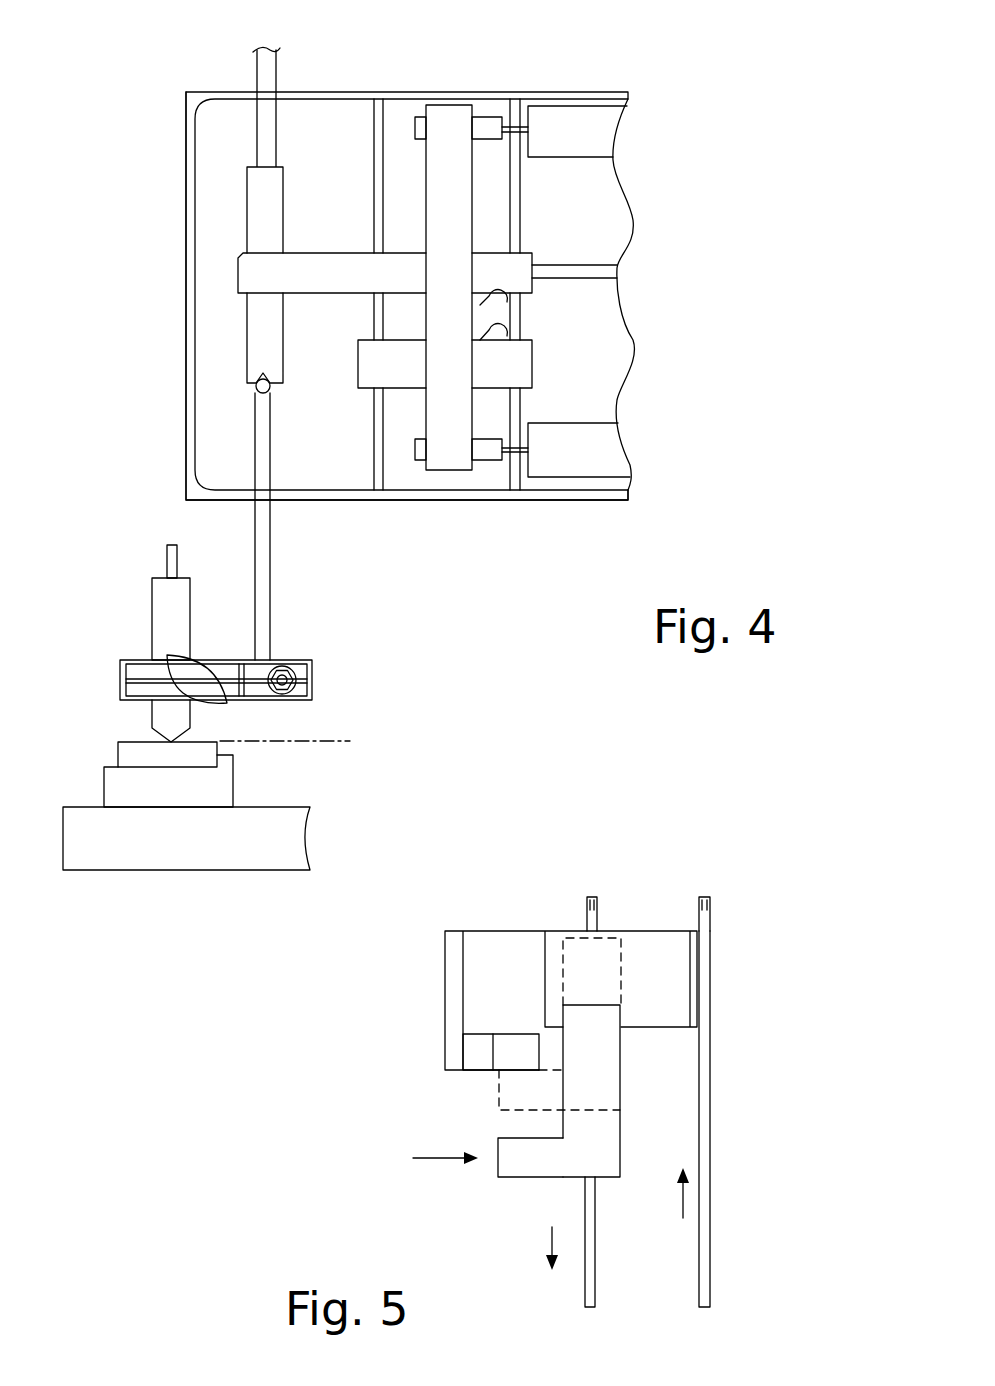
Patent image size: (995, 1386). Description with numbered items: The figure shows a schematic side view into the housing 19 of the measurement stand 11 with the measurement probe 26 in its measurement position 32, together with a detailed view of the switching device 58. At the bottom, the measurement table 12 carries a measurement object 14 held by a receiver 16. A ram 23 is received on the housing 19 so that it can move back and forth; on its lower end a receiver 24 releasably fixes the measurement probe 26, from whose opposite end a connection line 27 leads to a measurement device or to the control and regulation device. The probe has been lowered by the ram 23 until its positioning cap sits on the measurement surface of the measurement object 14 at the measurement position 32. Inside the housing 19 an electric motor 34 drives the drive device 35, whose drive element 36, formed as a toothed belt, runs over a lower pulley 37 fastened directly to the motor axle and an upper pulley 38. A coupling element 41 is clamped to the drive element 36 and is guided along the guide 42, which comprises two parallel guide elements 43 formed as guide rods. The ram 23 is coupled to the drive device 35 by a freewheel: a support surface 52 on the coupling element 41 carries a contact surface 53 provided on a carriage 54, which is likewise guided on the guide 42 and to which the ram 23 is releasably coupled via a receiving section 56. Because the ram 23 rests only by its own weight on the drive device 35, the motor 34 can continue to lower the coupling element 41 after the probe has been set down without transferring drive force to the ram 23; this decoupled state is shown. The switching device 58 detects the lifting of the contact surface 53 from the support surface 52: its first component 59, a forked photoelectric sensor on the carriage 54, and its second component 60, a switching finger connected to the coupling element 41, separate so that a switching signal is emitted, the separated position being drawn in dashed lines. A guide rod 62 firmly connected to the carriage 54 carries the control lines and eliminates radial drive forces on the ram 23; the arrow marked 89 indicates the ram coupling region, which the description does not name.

In FIG. 4, the measurement stand 11 is at (752, 155).
In FIG. 4, the measurement table 12 is at (175, 820).
In FIG. 4, the measurement object 14 is at (130, 753).
In FIG. 4, the receiver 16 is at (205, 782).
In FIG. 4, the housing 19 is at (565, 94).
In FIG. 4, the ram 23 is at (258, 521).
In FIG. 4, the receiver 24 is at (130, 681).
In FIG. 4, the measurement probe 26 is at (158, 623).
In FIG. 4, the connection line 27 is at (170, 562).
In FIG. 4, the measurement position 32 is at (326, 740).
In FIG. 4, the electric motor 34 is at (597, 462).
In FIG. 4, the drive device 35 is at (443, 92).
In FIG. 5, the drive device 35 is at (735, 1047).
In FIG. 4, the drive element 36 is at (449, 128).
In FIG. 5, the drive element 36 is at (588, 1280).
In FIG. 4, the lower pulley 37 is at (487, 450).
In FIG. 4, the upper pulley 38 is at (487, 128).
In FIG. 4, the coupling element 41 is at (520, 370).
In FIG. 5, the coupling element 41 is at (605, 1160).
In FIG. 4, the guide 42 is at (362, 520).
In FIG. 4, the guide elements 43 is at (513, 473).
In FIG. 5, the guide elements 43 is at (703, 897).
In FIG. 4, the support surface 52 is at (483, 303).
In FIG. 4, the contact surface 53 is at (483, 338).
In FIG. 4, the carriage 54 is at (258, 275).
In FIG. 5, the carriage 54 is at (478, 985).
In FIG. 4, the receiving section 56 is at (400, 300).
In FIG. 5, the switching device 58 is at (480, 1085).
In FIG. 5, the first component 59 is at (510, 1051).
In FIG. 5, the second component 60 is at (528, 1160).
In FIG. 4, the guide rod 62 is at (585, 270).
In FIG. 4, the pivot joint 89 is at (240, 382).